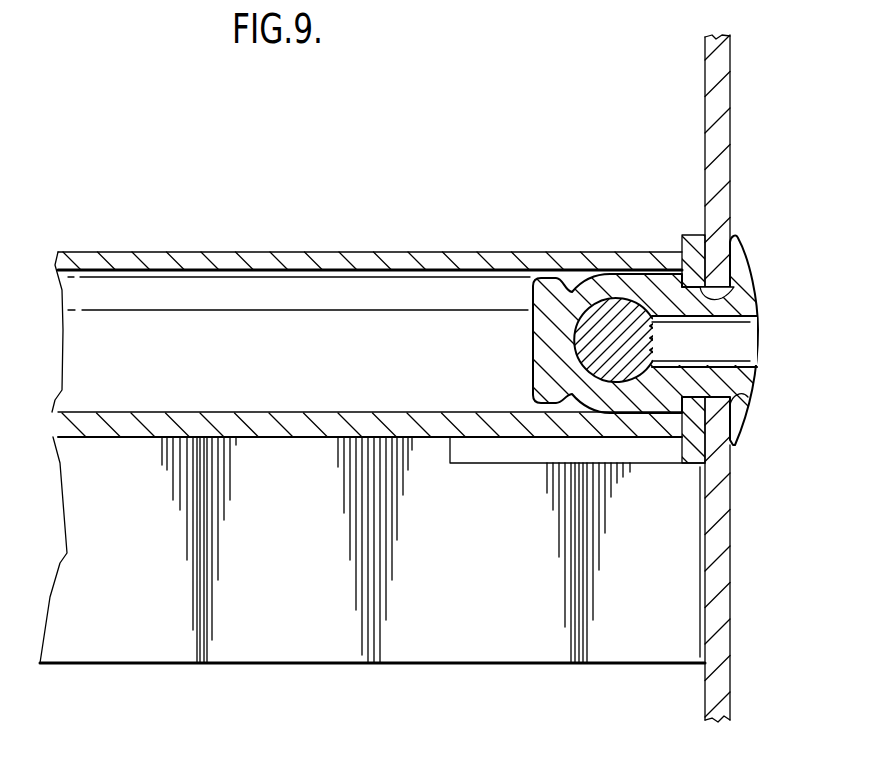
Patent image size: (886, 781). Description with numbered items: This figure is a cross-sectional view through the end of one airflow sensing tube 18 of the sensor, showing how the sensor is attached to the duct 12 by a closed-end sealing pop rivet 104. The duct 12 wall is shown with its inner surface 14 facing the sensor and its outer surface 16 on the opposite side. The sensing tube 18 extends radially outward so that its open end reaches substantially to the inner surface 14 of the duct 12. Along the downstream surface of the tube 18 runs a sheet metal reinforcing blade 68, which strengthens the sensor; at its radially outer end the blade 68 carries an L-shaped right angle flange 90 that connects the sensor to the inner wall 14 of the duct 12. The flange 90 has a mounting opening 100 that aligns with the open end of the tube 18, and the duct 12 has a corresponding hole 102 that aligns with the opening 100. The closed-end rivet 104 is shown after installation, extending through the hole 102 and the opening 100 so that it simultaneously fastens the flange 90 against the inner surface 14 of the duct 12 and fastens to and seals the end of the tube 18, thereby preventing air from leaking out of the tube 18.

The air duct 12 is at (719, 371).
The inner surface 14 is at (704, 86).
The outer surface 16 is at (730, 92).
The airflow sensing tube 18 is at (428, 252).
The reinforcing blade 68 is at (386, 645).
The right angle flange 90 is at (694, 235).
The mounting opening 100 is at (710, 299).
The hole 102 is at (733, 390).
The closed-end sealing pop rivet 104 is at (757, 336).